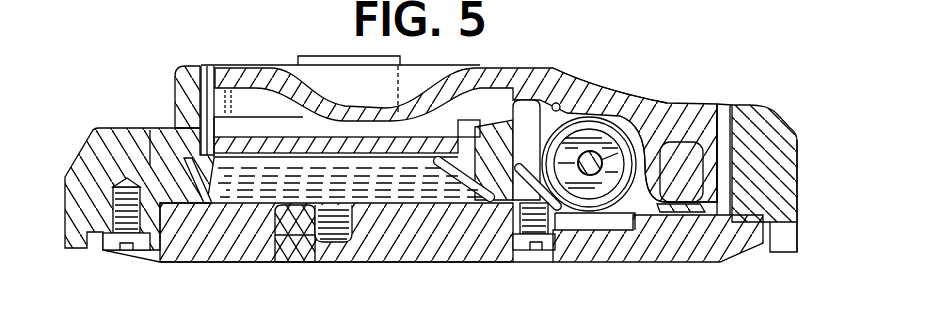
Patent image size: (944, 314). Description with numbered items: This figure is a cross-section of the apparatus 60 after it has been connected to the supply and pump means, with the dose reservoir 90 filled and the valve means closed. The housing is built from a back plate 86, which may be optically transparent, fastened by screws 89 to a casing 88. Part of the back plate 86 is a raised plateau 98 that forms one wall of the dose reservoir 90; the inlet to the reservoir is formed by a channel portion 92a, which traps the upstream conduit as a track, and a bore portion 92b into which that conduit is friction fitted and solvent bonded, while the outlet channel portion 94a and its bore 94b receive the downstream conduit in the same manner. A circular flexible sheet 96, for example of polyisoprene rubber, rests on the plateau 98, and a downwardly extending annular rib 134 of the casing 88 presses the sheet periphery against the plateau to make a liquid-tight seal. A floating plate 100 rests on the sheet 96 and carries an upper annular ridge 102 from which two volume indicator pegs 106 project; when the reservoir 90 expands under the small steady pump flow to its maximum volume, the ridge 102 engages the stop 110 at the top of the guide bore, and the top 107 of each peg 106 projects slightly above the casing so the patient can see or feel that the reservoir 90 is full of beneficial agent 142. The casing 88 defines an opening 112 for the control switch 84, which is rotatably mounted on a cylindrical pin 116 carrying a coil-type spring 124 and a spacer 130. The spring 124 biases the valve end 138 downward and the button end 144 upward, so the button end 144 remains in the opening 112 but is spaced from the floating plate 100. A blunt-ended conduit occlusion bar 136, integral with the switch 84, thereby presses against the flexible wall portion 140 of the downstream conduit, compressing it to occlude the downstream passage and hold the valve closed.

The apparatus 60 is at (98, 77).
The control switch 84 is at (500, 66).
The back plate 86 is at (655, 263).
The casing 88 is at (798, 161).
The screws 89 is at (540, 262).
The dose reservoir 90 is at (205, 233).
The channel portion 92a is at (328, 247).
The bore portion 92b is at (356, 262).
The outlet channel portion 94a is at (283, 278).
The sleeve 94b is at (278, 262).
The circular flexible sheet 96 is at (388, 137).
The raised plateau 98 is at (413, 207).
The floating plate 100 is at (288, 136).
The upper annular ridge 102 is at (224, 110).
The volume indicator pegs 106 is at (305, 56).
The top of volume indicator peg 107 is at (395, 56).
The stop 110 is at (474, 124).
The opening 112 is at (200, 66).
The cylindrical pin 116 is at (643, 110).
The coil-type spring 124 is at (603, 90).
The spacer 130 is at (600, 230).
The annular rib 134 is at (150, 127).
The conduit occlusion bar 136 is at (755, 107).
The valve end 138 is at (697, 112).
The flexible wall portion 140 is at (718, 218).
The beneficial agent 142 is at (247, 207).
The button end 144 is at (240, 65).